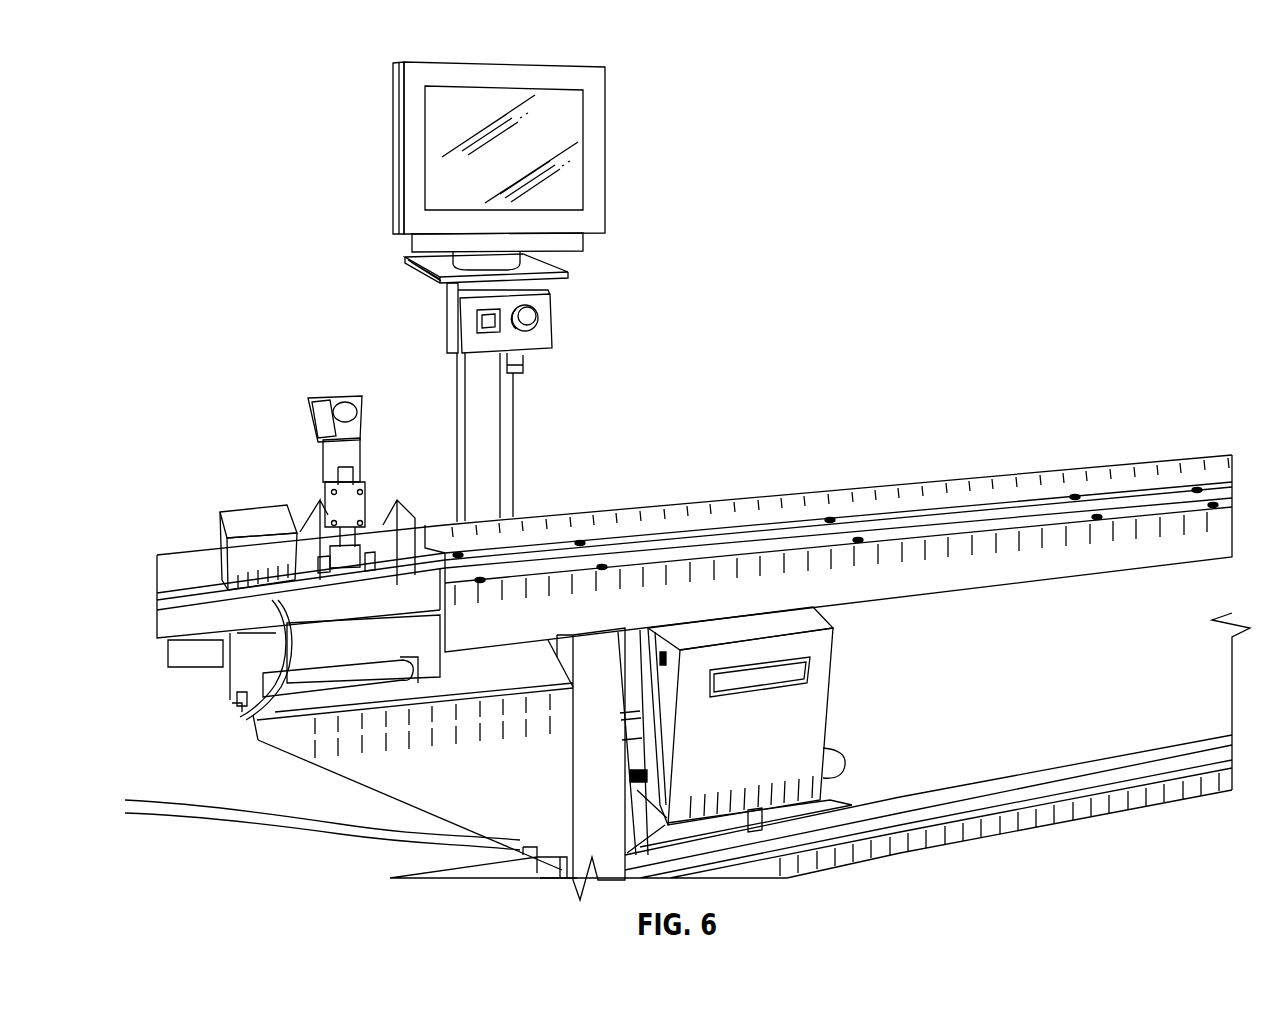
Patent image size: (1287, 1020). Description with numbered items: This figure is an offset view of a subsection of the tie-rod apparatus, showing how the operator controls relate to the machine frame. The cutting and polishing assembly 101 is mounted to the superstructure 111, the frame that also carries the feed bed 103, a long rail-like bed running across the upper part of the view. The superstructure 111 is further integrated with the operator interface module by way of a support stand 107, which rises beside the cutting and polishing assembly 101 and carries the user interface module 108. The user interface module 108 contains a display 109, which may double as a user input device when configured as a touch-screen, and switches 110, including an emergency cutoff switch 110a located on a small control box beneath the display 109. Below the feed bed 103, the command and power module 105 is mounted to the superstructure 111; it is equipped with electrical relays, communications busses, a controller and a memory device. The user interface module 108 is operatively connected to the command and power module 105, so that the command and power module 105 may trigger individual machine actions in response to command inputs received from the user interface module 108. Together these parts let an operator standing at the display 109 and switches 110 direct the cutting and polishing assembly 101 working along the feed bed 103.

The cutting and polishing assembly 101 is at (155, 497).
The feed bed 103 is at (1172, 498).
The command and power module 105 is at (774, 754).
The support stand 107 is at (480, 467).
The user interface module 108 is at (391, 45).
The display 109 is at (567, 182).
The switches 110 is at (468, 325).
The emergency cutoff switch 110a is at (528, 313).
The superstructure 111 is at (611, 671).